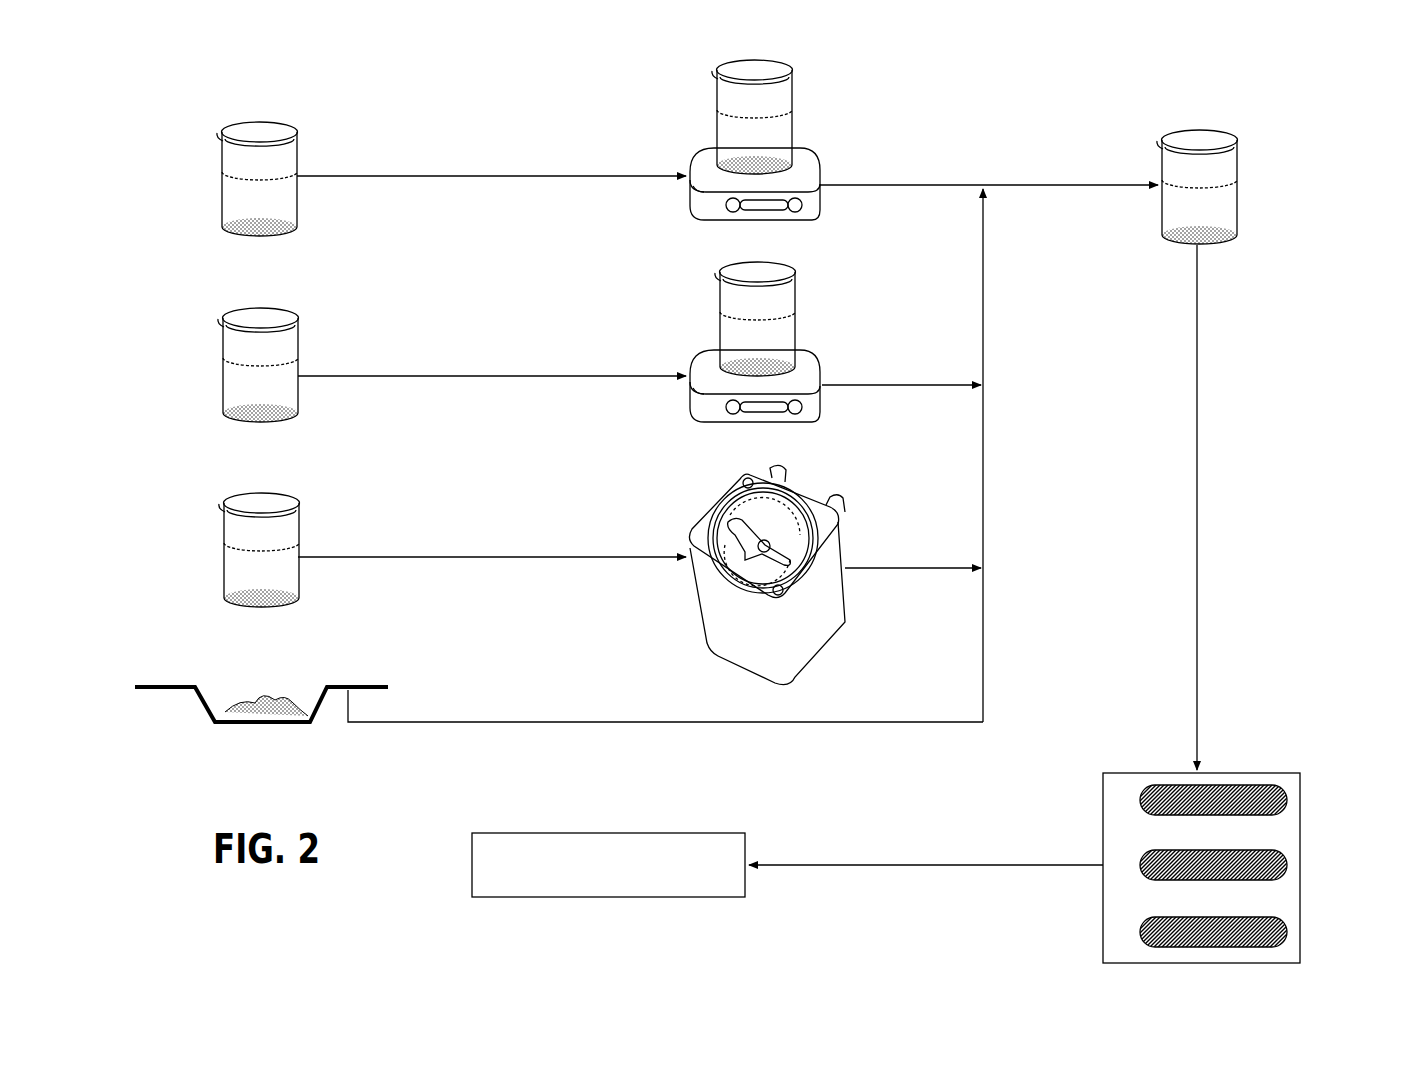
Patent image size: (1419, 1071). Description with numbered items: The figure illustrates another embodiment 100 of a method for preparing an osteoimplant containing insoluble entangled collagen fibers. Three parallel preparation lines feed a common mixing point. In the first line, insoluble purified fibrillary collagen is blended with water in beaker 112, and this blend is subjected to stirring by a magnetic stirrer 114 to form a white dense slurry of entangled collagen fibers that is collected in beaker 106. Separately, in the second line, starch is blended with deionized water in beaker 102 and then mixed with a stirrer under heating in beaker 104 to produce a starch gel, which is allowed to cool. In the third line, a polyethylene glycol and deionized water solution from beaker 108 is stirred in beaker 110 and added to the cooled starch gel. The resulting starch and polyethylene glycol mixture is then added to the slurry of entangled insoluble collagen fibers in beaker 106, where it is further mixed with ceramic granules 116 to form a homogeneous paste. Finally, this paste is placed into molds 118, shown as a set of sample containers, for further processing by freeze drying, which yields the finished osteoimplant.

The method for preparing an osteoimplant 100 is at (1307, 146).
The beaker 102 is at (228, 118).
The beaker 104 is at (690, 118).
The beaker 106 is at (1168, 124).
The beaker 108 is at (231, 303).
The beaker 110 is at (692, 318).
The beaker 112 is at (231, 489).
The magnetic stirrer 114 is at (692, 492).
The ceramic granules 116 is at (224, 677).
The molds 118 is at (1097, 792).